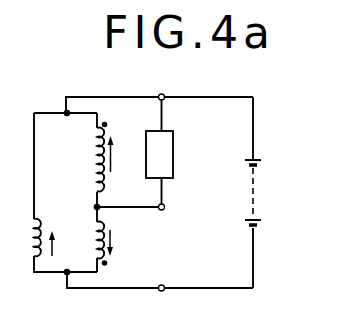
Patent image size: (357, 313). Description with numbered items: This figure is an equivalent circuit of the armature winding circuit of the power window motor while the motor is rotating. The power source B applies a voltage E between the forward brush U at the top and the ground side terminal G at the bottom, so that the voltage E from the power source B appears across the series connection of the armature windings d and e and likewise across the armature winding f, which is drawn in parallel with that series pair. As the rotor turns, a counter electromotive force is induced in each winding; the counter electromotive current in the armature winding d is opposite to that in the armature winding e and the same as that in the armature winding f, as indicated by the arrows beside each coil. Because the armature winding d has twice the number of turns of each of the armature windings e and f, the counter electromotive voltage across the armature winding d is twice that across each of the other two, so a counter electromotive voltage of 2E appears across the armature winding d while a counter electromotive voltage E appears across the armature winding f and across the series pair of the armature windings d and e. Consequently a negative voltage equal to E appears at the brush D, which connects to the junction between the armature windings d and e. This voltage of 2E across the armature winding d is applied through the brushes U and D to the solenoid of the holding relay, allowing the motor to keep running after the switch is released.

The forward brush U is at (162, 94).
The brush D is at (163, 210).
The ground terminal G is at (164, 286).
The power source B is at (248, 183).
The armature winding d is at (98, 163).
The armature winding e is at (97, 237).
The armature winding f is at (33, 237).
The counter electromotive voltage 2E is at (120, 124).
The voltage E is at (60, 242).